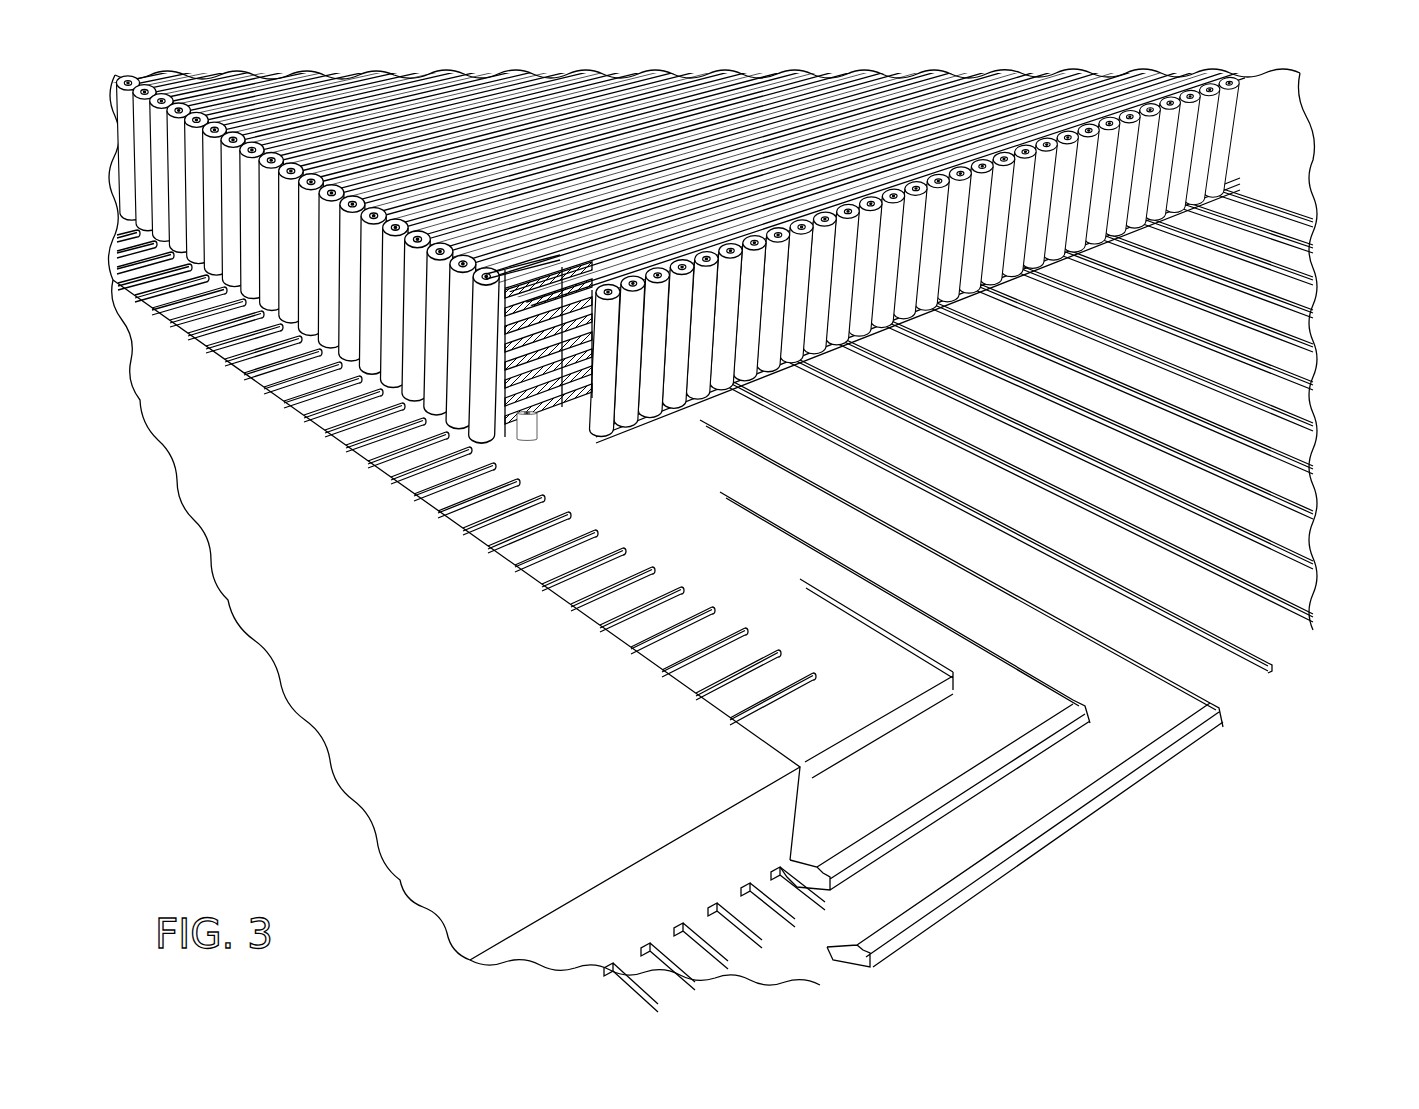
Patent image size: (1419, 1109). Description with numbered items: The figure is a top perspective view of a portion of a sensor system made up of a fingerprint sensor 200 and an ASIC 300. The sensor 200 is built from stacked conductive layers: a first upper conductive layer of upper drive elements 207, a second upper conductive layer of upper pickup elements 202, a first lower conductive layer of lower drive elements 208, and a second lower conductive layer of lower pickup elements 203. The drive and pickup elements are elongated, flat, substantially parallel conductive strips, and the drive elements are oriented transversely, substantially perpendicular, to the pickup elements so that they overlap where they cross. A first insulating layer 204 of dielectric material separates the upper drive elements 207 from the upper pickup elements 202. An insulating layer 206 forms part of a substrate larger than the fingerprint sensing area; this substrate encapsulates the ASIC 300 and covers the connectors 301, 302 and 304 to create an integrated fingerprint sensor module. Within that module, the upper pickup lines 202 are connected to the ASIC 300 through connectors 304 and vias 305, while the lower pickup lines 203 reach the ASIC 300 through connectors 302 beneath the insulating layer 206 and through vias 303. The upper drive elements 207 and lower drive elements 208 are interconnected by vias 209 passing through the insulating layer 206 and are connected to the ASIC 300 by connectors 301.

The sensor 200 is at (1345, 141).
The upper pickup elements 202 is at (437, 372).
The lower pickup elements 203 is at (580, 370).
The first insulating layer 204 is at (586, 284).
The insulating layer 206 is at (527, 422).
The upper drive elements 207 is at (520, 300).
The lower drive elements 208 is at (583, 420).
The vias 209 is at (637, 390).
The ASIC 300 is at (457, 756).
The connectors 301 is at (947, 814).
The connectors 302 is at (837, 803).
The vias 303 is at (560, 340).
The connectors 304 is at (860, 737).
The vias 305 is at (455, 277).